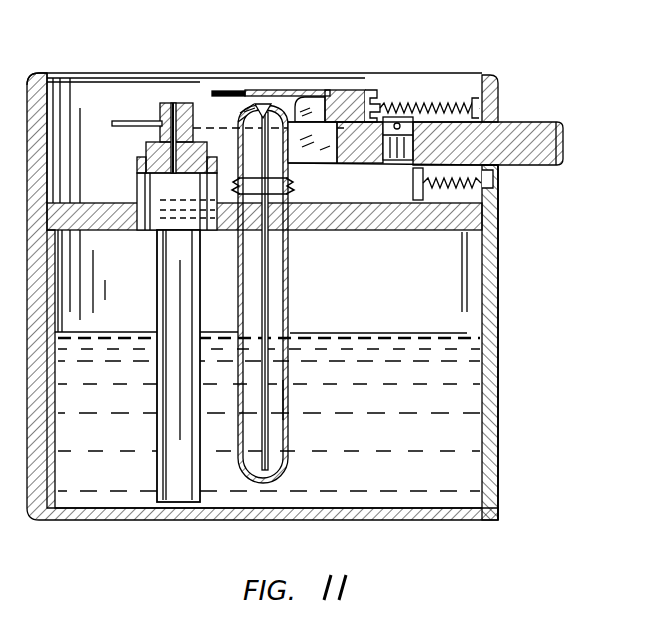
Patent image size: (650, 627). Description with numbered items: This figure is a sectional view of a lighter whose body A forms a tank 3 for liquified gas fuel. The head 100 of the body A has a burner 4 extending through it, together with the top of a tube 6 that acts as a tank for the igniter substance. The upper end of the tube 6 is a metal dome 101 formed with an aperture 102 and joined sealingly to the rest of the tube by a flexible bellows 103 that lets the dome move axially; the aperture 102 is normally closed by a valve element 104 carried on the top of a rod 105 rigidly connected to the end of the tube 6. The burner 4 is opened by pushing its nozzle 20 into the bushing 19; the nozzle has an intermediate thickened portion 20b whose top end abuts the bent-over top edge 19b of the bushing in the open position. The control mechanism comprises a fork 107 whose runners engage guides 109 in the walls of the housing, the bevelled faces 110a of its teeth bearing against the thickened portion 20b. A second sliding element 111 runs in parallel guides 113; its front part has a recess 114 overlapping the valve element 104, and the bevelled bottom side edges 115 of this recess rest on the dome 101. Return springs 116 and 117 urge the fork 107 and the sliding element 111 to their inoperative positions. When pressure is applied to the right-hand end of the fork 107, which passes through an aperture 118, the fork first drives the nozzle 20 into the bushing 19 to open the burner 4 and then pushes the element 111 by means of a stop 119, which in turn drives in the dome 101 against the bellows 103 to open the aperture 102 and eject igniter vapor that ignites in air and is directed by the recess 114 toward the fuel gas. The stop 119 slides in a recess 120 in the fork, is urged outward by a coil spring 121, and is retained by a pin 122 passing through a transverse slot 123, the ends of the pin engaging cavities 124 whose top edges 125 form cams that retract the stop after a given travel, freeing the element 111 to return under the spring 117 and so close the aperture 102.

The tank 3 is at (364, 295).
The burner 4 is at (130, 162).
The tube 6 is at (292, 305).
The bushing 19 is at (148, 232).
The top edge of the bushing 19b is at (140, 167).
The nozzle 20 is at (165, 97).
The intermediate thickened portion 20b is at (147, 148).
The head 100 is at (302, 238).
The metal dome 101 is at (253, 102).
The aperture 102 is at (243, 117).
The flexible bellows 103 is at (295, 193).
The valve element 104 is at (268, 100).
The rod 105 is at (288, 404).
The fork 107 is at (550, 122).
The guides 109 is at (128, 118).
The bevelled faces 110a is at (227, 157).
The second sliding element 111 is at (340, 92).
The guides 113 is at (212, 91).
The recess 114 is at (313, 103).
The bottom side edges 115 is at (293, 107).
The return spring 116 is at (450, 205).
The return spring 117 is at (368, 128).
The aperture 118 is at (502, 168).
The stop 119 is at (395, 98).
The recess 120 is at (378, 167).
The coil spring 121 is at (404, 203).
The pin 122 is at (400, 105).
The transverse slot 123 is at (465, 103).
The cavities 124 is at (320, 223).
The top edges 125 is at (352, 167).
The body A is at (460, 320).